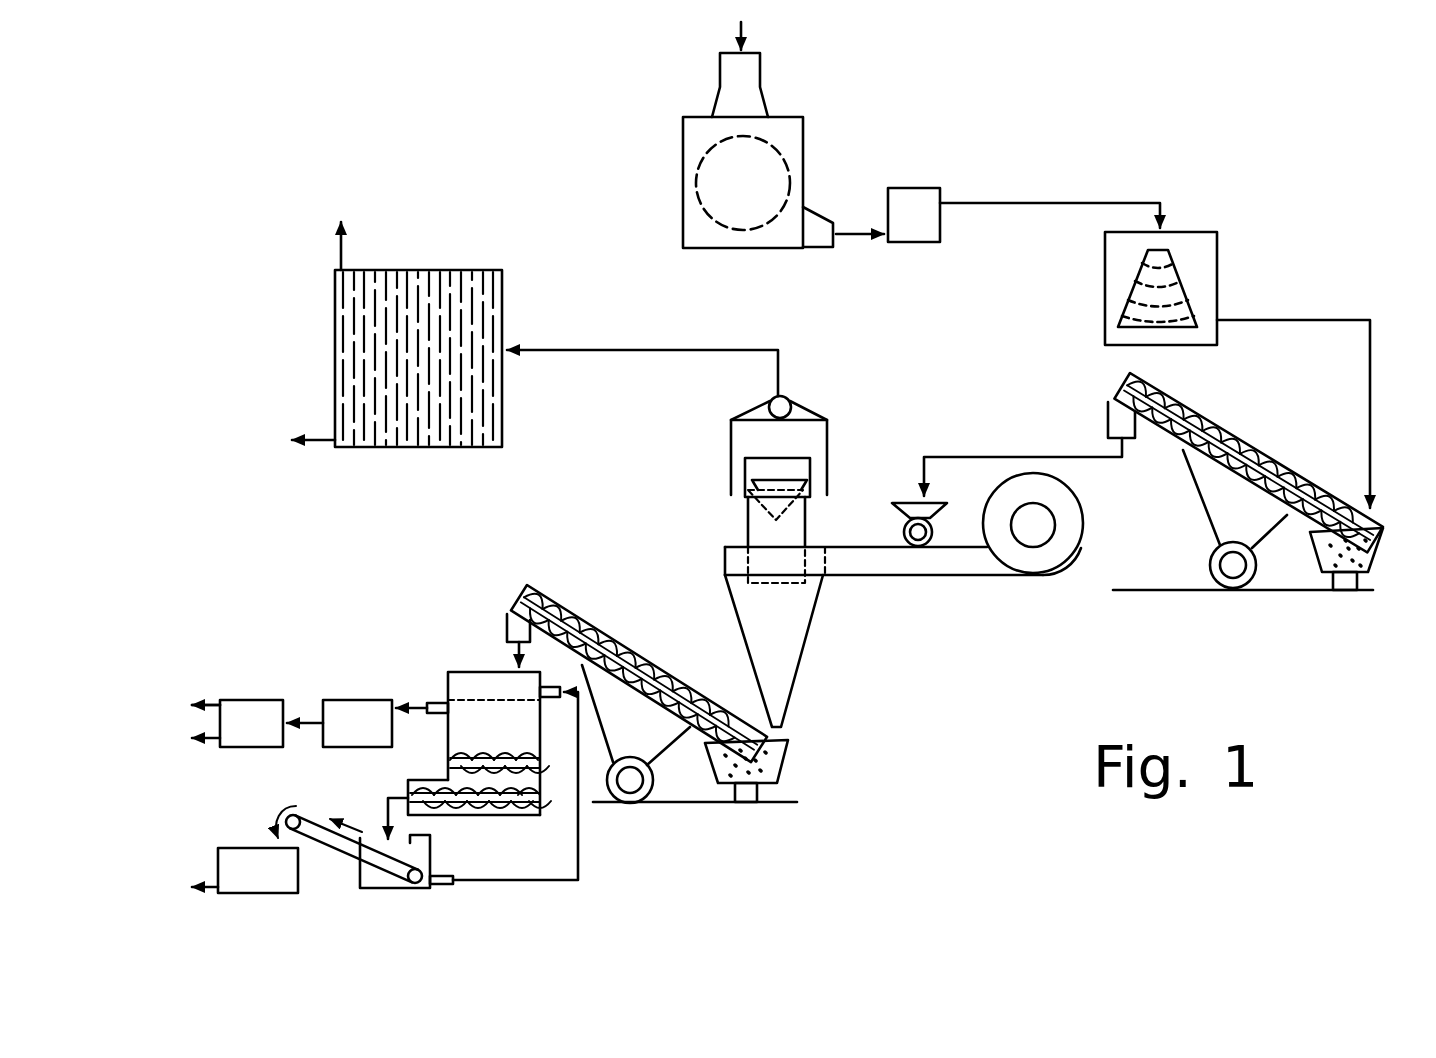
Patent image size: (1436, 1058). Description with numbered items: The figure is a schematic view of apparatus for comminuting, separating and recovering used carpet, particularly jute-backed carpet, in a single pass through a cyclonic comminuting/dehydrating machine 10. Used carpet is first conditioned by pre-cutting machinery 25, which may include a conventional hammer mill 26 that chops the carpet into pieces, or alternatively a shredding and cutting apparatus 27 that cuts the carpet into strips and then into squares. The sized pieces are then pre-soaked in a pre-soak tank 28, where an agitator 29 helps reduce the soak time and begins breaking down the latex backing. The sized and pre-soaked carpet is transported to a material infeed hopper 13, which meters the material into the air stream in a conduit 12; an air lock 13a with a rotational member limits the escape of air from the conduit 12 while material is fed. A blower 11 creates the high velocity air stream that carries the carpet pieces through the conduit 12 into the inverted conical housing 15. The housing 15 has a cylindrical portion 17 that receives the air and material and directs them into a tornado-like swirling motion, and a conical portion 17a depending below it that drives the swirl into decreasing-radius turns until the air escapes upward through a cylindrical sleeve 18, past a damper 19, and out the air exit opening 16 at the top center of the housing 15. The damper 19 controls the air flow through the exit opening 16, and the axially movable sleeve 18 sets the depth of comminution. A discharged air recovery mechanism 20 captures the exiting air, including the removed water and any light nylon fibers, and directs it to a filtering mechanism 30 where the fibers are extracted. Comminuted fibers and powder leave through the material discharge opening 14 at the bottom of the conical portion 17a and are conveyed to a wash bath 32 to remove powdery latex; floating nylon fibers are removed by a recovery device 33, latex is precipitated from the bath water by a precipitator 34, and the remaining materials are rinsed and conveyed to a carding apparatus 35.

The cyclonic comminuting/dehydrating machine 10 is at (680, 486).
The blower 11 is at (1033, 575).
The conduit 12 is at (883, 575).
The material infeed hopper 13 is at (892, 505).
The air lock 13a is at (905, 537).
The material discharge opening 14 is at (781, 727).
The inverted conical housing 15 is at (830, 651).
The air exit opening 16 is at (763, 443).
The cylindrical portion 17 is at (725, 566).
The conical portion 17a is at (745, 657).
The cylindrical sleeve 18 is at (748, 532).
The damper 19 is at (772, 481).
The discharged air recovery mechanism 20 is at (789, 400).
The pre-cutting machinery 25 is at (905, 103).
The hammer mill 26 is at (700, 117).
The shredding and cutting apparatus 27 is at (923, 188).
The pre-soak tank 28 is at (1218, 248).
The agitator 29 is at (1105, 296).
The filtering mechanism 30 is at (502, 293).
The wash bath 32 is at (478, 672).
The recovery device 33 is at (365, 700).
The precipitator 34 is at (265, 700).
The carding apparatus 35 is at (253, 848).